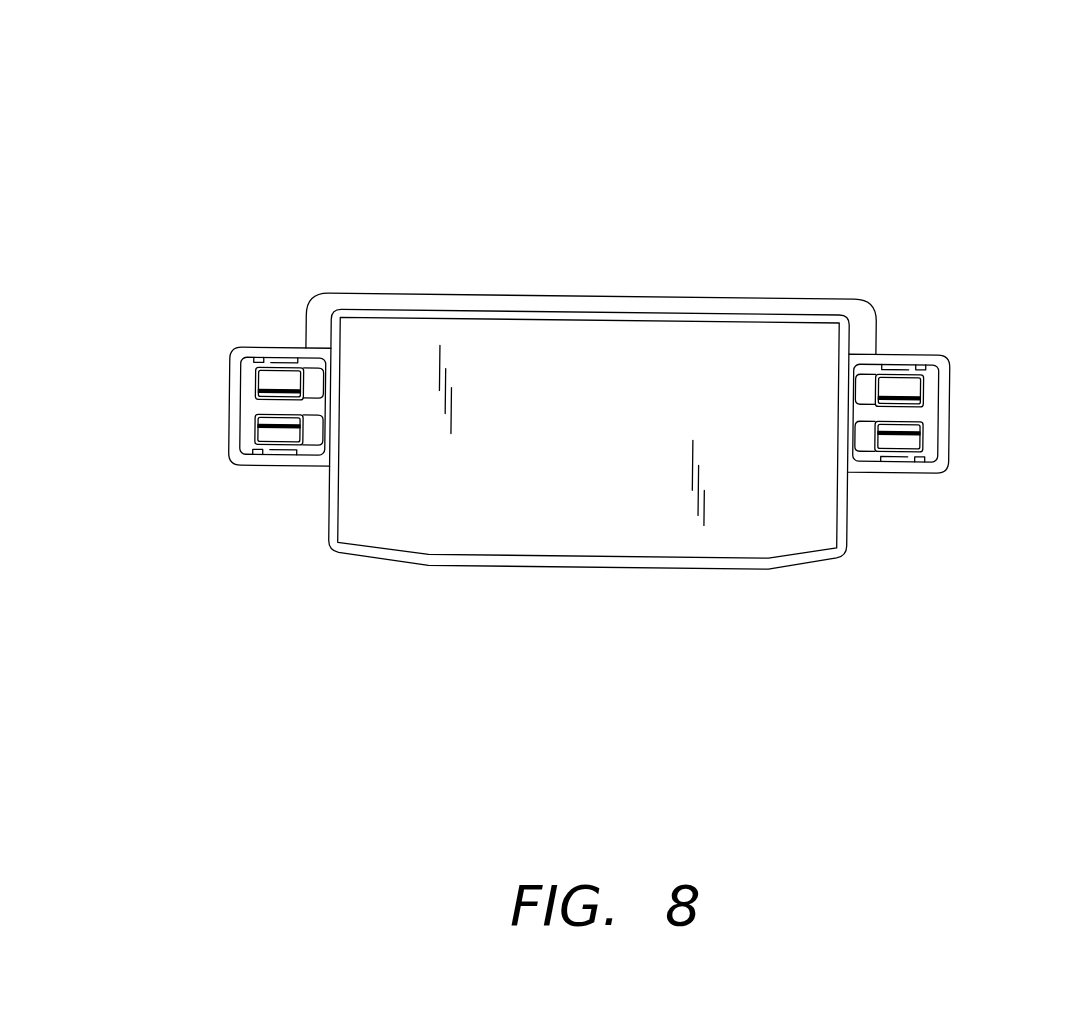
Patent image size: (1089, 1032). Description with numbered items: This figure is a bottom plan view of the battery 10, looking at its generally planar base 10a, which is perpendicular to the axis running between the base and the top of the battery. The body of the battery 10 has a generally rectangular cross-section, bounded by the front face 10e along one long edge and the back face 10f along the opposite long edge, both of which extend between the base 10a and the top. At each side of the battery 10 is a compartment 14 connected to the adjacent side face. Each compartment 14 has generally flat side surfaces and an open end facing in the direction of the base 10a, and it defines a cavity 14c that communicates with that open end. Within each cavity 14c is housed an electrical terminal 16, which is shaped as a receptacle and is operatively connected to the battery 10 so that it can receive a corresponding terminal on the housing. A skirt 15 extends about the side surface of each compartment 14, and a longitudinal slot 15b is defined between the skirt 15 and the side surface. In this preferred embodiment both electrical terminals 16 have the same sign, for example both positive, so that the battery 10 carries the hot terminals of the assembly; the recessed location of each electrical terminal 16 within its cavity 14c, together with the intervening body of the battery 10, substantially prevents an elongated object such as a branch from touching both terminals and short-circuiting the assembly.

The battery 10 is at (878, 88).
The base 10a is at (589, 438).
The front face 10e is at (533, 565).
The back face 10f is at (567, 296).
The compartment 14 is at (258, 379).
The cavity 14c is at (262, 447).
The skirt 15 is at (262, 466).
The longitudinal slot 15b is at (279, 357).
The electrical terminal 16 is at (303, 392).